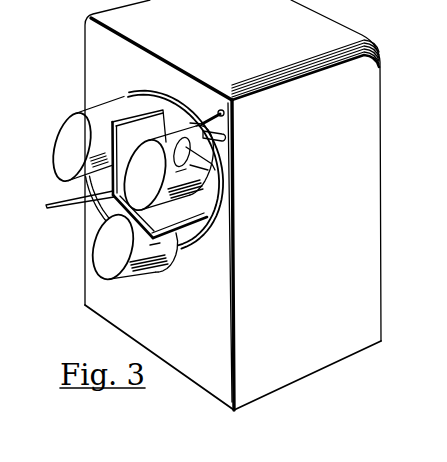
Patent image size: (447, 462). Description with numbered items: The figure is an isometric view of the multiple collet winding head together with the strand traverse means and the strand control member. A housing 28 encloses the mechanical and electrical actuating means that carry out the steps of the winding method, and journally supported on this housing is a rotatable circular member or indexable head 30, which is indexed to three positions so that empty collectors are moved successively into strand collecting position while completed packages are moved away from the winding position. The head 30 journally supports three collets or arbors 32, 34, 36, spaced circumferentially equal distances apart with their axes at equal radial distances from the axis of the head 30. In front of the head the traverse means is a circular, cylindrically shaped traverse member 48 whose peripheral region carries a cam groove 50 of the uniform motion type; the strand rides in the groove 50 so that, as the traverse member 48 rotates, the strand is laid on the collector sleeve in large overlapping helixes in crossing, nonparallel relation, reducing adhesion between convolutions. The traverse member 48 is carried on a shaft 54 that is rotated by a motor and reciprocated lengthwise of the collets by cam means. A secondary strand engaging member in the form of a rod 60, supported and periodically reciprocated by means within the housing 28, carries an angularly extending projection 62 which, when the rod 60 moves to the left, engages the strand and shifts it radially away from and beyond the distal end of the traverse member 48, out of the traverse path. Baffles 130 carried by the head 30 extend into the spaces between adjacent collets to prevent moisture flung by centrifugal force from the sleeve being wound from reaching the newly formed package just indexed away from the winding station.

The housing 28 is at (338, 251).
The indexable head 30 is at (229, 233).
The collet 32 is at (150, 191).
The collet 34 is at (120, 261).
The collet 36 is at (80, 161).
The traverse member 48 is at (227, 168).
The cam groove 50 is at (228, 154).
The shaft 54 is at (229, 139).
The rod 60 is at (202, 117).
The angularly extending projection 62 is at (229, 121).
The baffles 130 is at (138, 93).